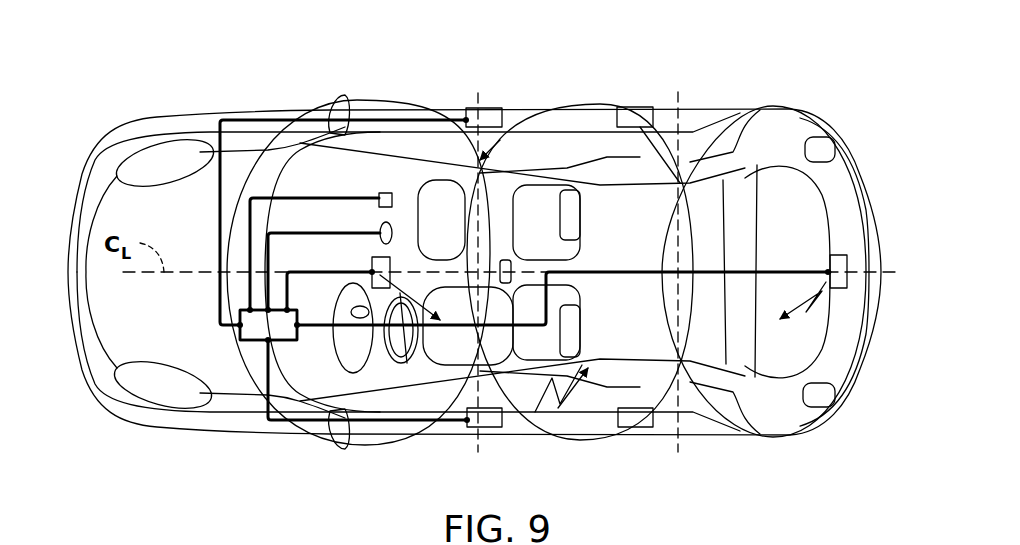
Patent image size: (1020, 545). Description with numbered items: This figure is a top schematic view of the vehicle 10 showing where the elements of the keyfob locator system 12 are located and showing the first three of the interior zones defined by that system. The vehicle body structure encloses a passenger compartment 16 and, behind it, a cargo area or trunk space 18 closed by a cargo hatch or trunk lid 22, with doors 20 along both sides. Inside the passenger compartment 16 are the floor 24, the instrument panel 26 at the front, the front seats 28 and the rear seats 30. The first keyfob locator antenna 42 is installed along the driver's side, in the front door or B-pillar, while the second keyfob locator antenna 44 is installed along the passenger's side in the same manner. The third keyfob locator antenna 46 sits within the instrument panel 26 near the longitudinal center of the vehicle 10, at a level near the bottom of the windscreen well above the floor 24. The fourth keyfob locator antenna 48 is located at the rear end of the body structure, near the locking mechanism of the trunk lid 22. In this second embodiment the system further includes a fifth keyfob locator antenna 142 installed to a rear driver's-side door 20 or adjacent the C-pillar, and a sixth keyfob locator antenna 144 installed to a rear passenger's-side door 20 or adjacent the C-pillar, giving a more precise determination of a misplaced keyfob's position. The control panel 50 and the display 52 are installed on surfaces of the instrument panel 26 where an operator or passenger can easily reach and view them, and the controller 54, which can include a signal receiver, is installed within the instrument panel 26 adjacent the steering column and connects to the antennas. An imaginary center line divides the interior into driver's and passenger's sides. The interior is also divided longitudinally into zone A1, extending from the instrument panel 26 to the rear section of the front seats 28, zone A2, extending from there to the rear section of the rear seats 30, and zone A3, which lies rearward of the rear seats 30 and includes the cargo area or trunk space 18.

The vehicle 10 is at (245, 66).
The keyfob locator system 12 is at (256, 348).
The passenger compartment 16 is at (442, 267).
The cargo area or trunk space 18 is at (790, 203).
The doors 20 is at (443, 125).
The cargo hatch or trunk lid 22 is at (827, 190).
The floor 24 is at (403, 192).
The instrument panel 26 is at (387, 172).
The front seats 28 is at (443, 195).
The rear seats 30 is at (642, 230).
The first keyfob locator antenna 42 is at (493, 418).
The second keyfob locator antenna 44 is at (491, 120).
The third keyfob locator antenna 46 is at (372, 262).
The fourth keyfob locator antenna 48 is at (840, 263).
The control panel 50 is at (380, 193).
The display 52 is at (380, 226).
The controller 54 is at (253, 330).
The fifth keyfob locator antenna 142 is at (635, 421).
The sixth keyfob locator antenna 144 is at (632, 118).
The zone A1 is at (387, 433).
The zone A2 is at (570, 437).
The zone A3 is at (770, 437).